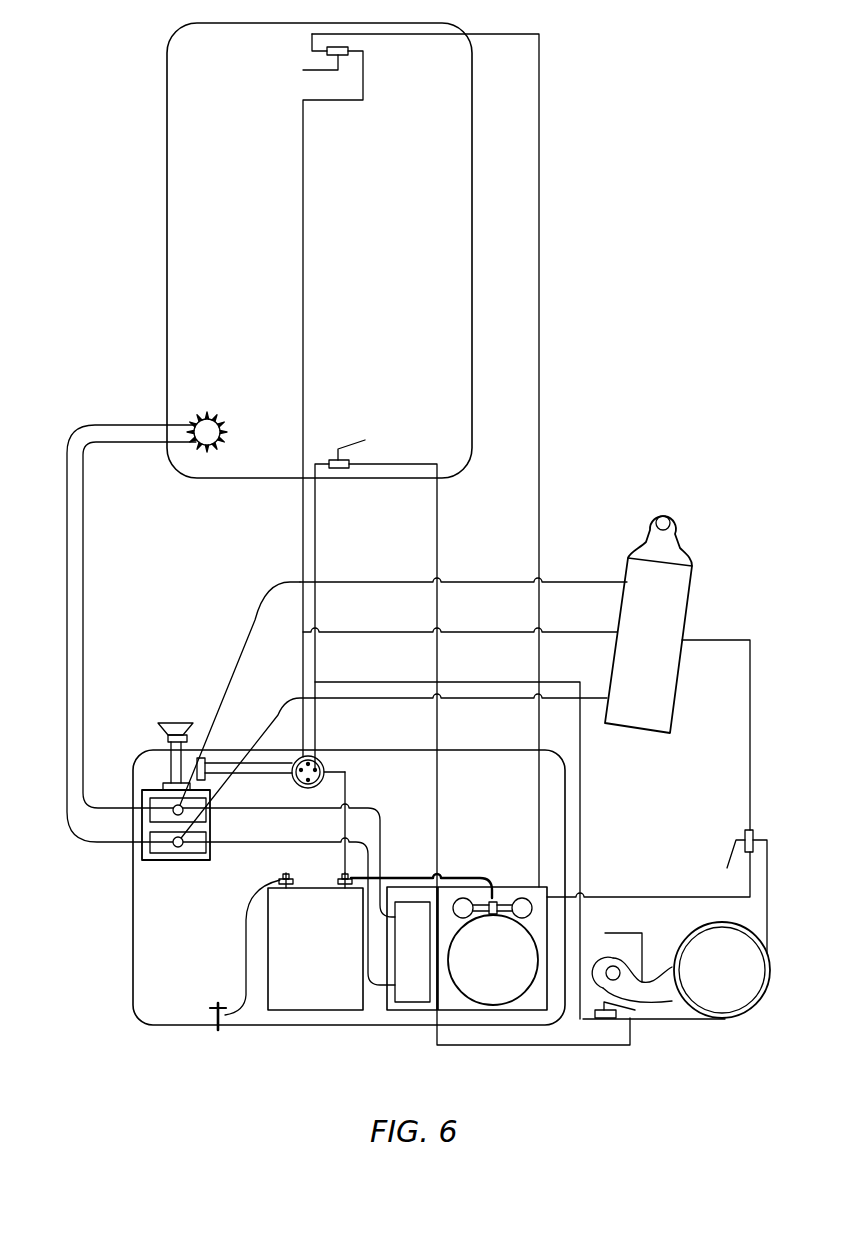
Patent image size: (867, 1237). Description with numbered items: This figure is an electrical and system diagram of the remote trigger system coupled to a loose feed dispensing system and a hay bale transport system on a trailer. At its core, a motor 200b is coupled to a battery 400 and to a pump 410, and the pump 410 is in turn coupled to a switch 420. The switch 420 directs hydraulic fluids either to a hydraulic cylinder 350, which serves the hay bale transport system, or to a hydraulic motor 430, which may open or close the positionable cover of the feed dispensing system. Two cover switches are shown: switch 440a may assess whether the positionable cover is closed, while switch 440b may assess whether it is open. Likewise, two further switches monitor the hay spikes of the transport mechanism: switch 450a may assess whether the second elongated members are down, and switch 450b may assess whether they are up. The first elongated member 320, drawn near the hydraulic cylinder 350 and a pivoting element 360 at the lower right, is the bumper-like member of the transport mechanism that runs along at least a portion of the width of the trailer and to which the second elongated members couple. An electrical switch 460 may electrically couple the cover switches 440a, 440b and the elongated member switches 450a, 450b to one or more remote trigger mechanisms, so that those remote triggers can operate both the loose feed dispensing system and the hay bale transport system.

The motor 200b is at (497, 1010).
The first elongated member 320 is at (722, 1022).
The hydraulic cylinder 350 is at (661, 720).
The lever 360 is at (663, 1006).
The battery 400 is at (298, 1004).
The pump 410 is at (410, 1010).
The switch 420 is at (176, 862).
The hydraulic motor 430 is at (208, 414).
The switch 440a is at (350, 48).
The switch 440b is at (339, 468).
The switch 450a is at (753, 833).
The switch 450b is at (603, 1022).
The electrical switch 460 is at (318, 757).